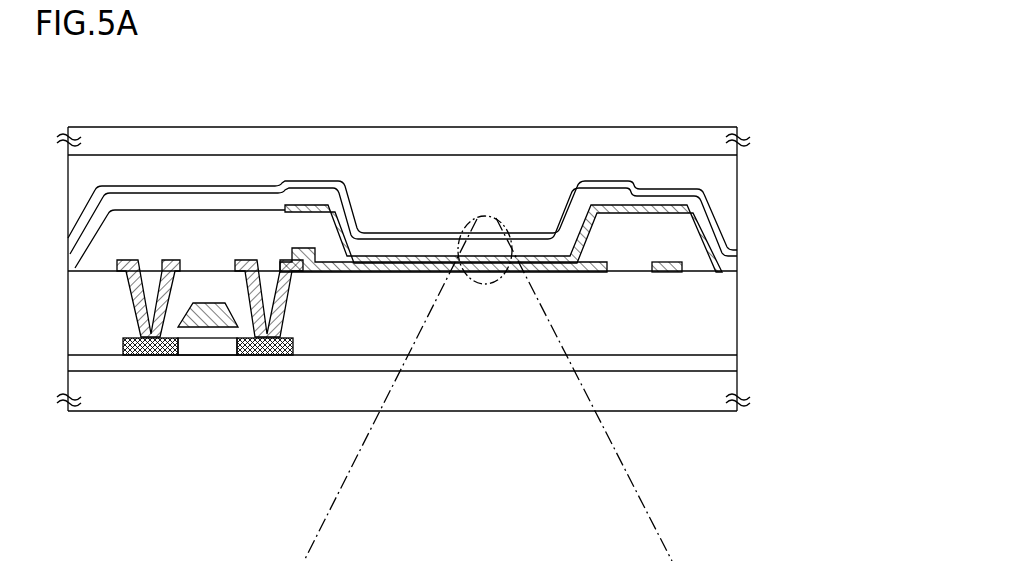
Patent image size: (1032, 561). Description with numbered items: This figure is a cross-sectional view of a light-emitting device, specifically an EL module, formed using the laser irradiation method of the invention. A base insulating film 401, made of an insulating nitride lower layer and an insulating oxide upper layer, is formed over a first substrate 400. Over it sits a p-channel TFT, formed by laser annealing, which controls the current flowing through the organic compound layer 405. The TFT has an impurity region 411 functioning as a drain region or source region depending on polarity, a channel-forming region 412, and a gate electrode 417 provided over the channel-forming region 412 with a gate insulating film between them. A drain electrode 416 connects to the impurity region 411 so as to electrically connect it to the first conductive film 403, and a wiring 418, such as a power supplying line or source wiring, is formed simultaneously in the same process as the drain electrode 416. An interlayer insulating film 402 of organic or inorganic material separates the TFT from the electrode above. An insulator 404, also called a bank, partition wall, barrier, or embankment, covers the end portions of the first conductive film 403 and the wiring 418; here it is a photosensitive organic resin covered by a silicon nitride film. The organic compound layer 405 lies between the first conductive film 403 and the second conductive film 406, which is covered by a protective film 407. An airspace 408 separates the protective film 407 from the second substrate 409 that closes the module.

The first substrate 400 is at (694, 407).
The base insulating film 401 is at (728, 366).
The interlayer insulating film 402 is at (728, 323).
The first conductive film 403 is at (383, 264).
The insulator 404 is at (690, 242).
The organic compound layer 405 is at (462, 267).
The second conductive film 406 is at (695, 203).
The protective film 407 is at (705, 190).
The airspace 408 is at (728, 167).
The second substrate 409 is at (657, 135).
The impurity region 411 is at (248, 357).
The channel-forming region 412 is at (212, 347).
The drain electrode 416 is at (283, 327).
The gate electrode 417 is at (203, 317).
The wiring 418 is at (662, 274).